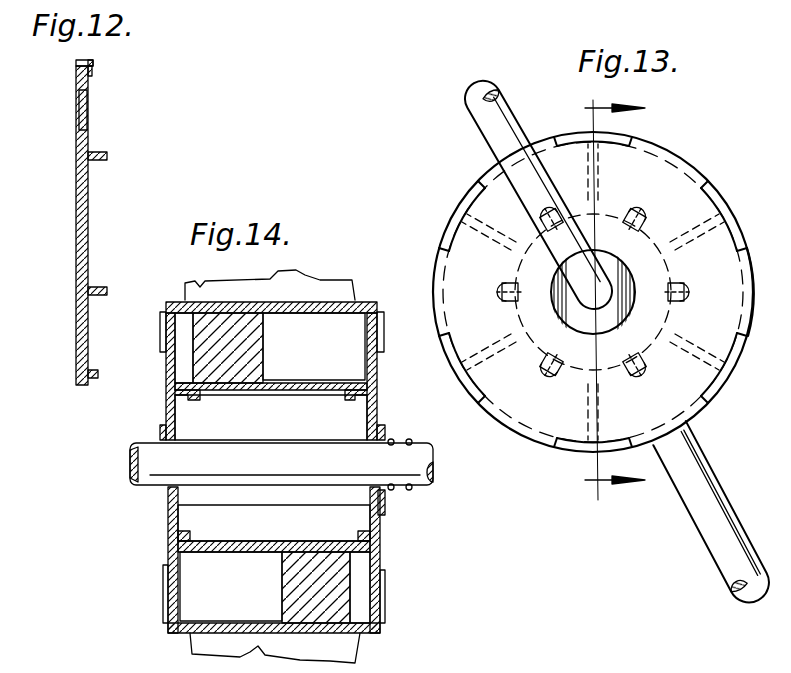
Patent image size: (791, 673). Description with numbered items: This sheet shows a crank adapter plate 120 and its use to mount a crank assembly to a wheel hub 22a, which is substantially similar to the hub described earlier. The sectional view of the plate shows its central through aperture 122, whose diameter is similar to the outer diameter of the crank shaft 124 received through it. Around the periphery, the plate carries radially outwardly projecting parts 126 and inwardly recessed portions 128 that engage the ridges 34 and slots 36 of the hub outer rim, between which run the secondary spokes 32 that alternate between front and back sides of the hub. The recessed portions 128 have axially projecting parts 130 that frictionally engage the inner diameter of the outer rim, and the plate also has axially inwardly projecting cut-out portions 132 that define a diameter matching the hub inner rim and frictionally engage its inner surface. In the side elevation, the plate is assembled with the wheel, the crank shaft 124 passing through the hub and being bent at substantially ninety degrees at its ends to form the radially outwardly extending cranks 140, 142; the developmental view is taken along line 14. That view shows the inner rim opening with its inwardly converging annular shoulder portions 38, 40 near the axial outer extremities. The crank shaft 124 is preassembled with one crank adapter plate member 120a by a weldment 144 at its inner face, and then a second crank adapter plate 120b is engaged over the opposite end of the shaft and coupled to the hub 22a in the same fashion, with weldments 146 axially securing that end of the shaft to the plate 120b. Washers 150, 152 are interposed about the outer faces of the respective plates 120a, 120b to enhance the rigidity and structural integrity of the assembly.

In FIG. 12, the central through aperture 122 is at (78, 222).
In FIG. 12, the crank adapter plate 120 is at (118, 208).
In FIG. 13, the crank adapter plate 120 is at (668, 183).
In FIG. 14, the crank adapter plate member 120a is at (157, 413).
In FIG. 14, the second crank adapter plate 120b is at (385, 578).
In FIG. 12, the radially outwardly projecting parts 126 is at (92, 62).
In FIG. 14, the radially outwardly projecting parts 126 is at (385, 627).
In FIG. 13, the radially outwardly projecting parts 126 is at (750, 262).
In FIG. 12, the inwardly recessed portions 128 is at (92, 72).
In FIG. 14, the inwardly recessed portions 128 is at (372, 300).
In FIG. 13, the inwardly recessed portions 128 is at (745, 228).
In FIG. 12, the axially projecting parts 130 is at (96, 80).
In FIG. 12, the axially inwardly projecting cut-out portions 132 is at (108, 156).
In FIG. 14, the axially inwardly projecting cut-out portions 132 is at (350, 528).
In FIG. 13, the axially inwardly projecting cut-out portions 132 is at (632, 216).
In FIG. 13, the ridges 34 is at (745, 205).
In FIG. 13, the slots 36 is at (750, 326).
In FIG. 13, the secondary spokes 32 is at (712, 383).
In FIG. 14, the annular shoulder portion 38 is at (345, 392).
In FIG. 14, the annular shoulder portion 40 is at (200, 388).
In FIG. 14, the weldment 144 is at (180, 432).
In FIG. 14, the weldments 146 is at (410, 438).
In FIG. 14, the washer 150 is at (387, 505).
In FIG. 14, the washer 152 is at (172, 488).
In FIG. 13, the washer 152 is at (628, 322).
In FIG. 14, the crank shaft 124 is at (433, 478).
In FIG. 14, the wheel hub 22a is at (158, 573).
In FIG. 13, the section line 14— 14 is at (626, 305).
In FIG. 13, the crank 142 is at (497, 108).
In FIG. 13, the crank 140 is at (720, 490).